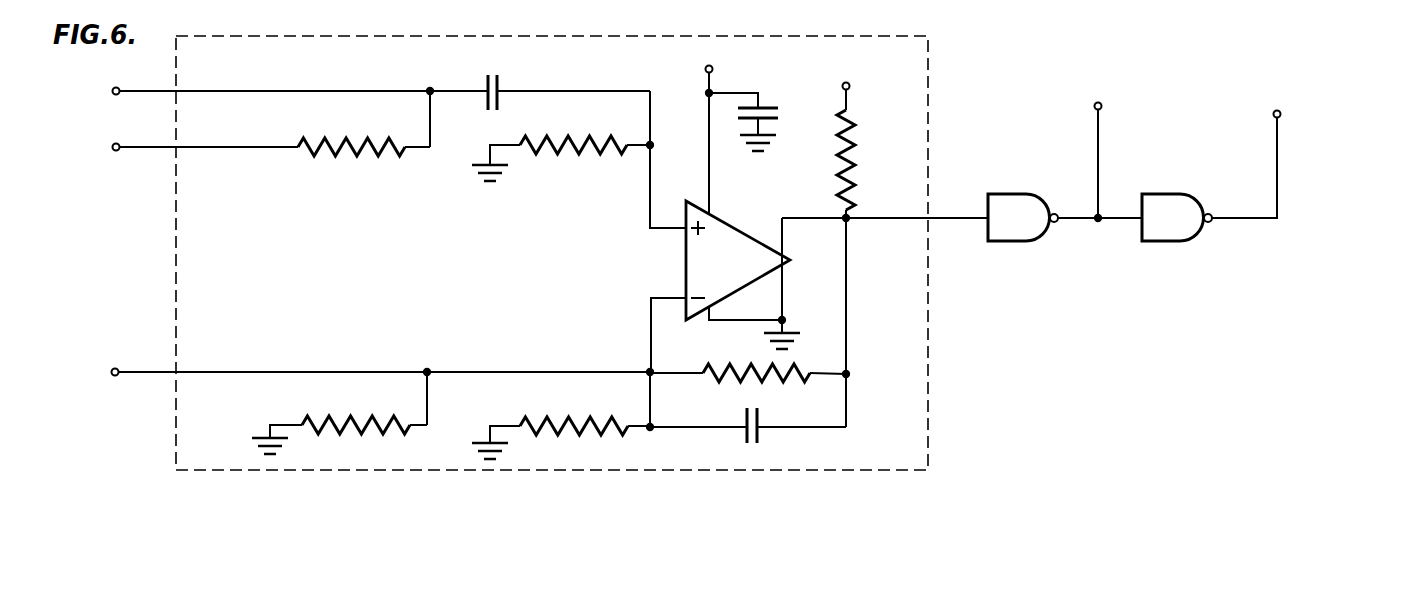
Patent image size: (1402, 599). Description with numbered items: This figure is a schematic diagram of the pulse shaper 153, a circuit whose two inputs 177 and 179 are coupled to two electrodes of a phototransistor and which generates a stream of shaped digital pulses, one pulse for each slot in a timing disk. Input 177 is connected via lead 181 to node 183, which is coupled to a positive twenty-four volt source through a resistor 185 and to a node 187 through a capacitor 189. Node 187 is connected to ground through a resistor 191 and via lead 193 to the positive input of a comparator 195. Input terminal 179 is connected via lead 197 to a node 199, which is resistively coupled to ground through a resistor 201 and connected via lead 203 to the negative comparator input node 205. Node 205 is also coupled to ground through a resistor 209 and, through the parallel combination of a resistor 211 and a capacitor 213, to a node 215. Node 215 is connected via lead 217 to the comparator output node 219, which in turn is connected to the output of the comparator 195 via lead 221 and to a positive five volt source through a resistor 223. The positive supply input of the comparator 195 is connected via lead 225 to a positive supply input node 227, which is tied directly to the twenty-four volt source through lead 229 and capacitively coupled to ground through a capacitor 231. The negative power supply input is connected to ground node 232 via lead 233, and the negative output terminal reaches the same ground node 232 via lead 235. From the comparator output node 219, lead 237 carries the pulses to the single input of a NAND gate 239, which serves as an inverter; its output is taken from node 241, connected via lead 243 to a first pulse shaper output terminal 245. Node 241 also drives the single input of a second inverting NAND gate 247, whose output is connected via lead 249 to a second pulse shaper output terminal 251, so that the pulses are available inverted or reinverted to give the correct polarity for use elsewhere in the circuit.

The pulse shaper 153 is at (928, 424).
The input 177 is at (112, 91).
The input terminal 179 is at (111, 372).
The lead 181 is at (160, 90).
The node 183 is at (430, 90).
The resistor 185 is at (330, 140).
The node 187 is at (689, 116).
The capacitor 189 is at (490, 112).
The resistor 191 is at (554, 140).
The lead 193 is at (649, 220).
The comparator 195 is at (744, 275).
The lead 197 is at (156, 373).
The node 199 is at (427, 372).
The resistor 201 is at (310, 420).
The lead 203 is at (611, 370).
The negative comparator input node 205 is at (651, 428).
The resistor 209 is at (522, 419).
The resistor 211 is at (714, 378).
The capacitor 213 is at (756, 404).
The node 215 is at (847, 376).
The lead 217 is at (846, 348).
The comparator output node 219 is at (848, 220).
The lead 221 is at (808, 218).
The resistor 223 is at (855, 124).
The lead 225 is at (711, 180).
The positive supply input node 227 is at (711, 92).
The lead 229 is at (706, 72).
The capacitor 231 is at (777, 112).
The ground node 232 is at (781, 322).
The lead 233 is at (712, 322).
The lead 235 is at (783, 313).
The lead 237 is at (956, 222).
The NAND gate 239 is at (1037, 234).
The node 241 is at (1099, 224).
The lead 243 is at (1099, 146).
The first pulse shaper output terminal 245 is at (1108, 74).
The second inverting NAND gate 247 is at (1189, 234).
The lead 249 is at (1278, 146).
The second pulse shaper output terminal 251 is at (1291, 72).